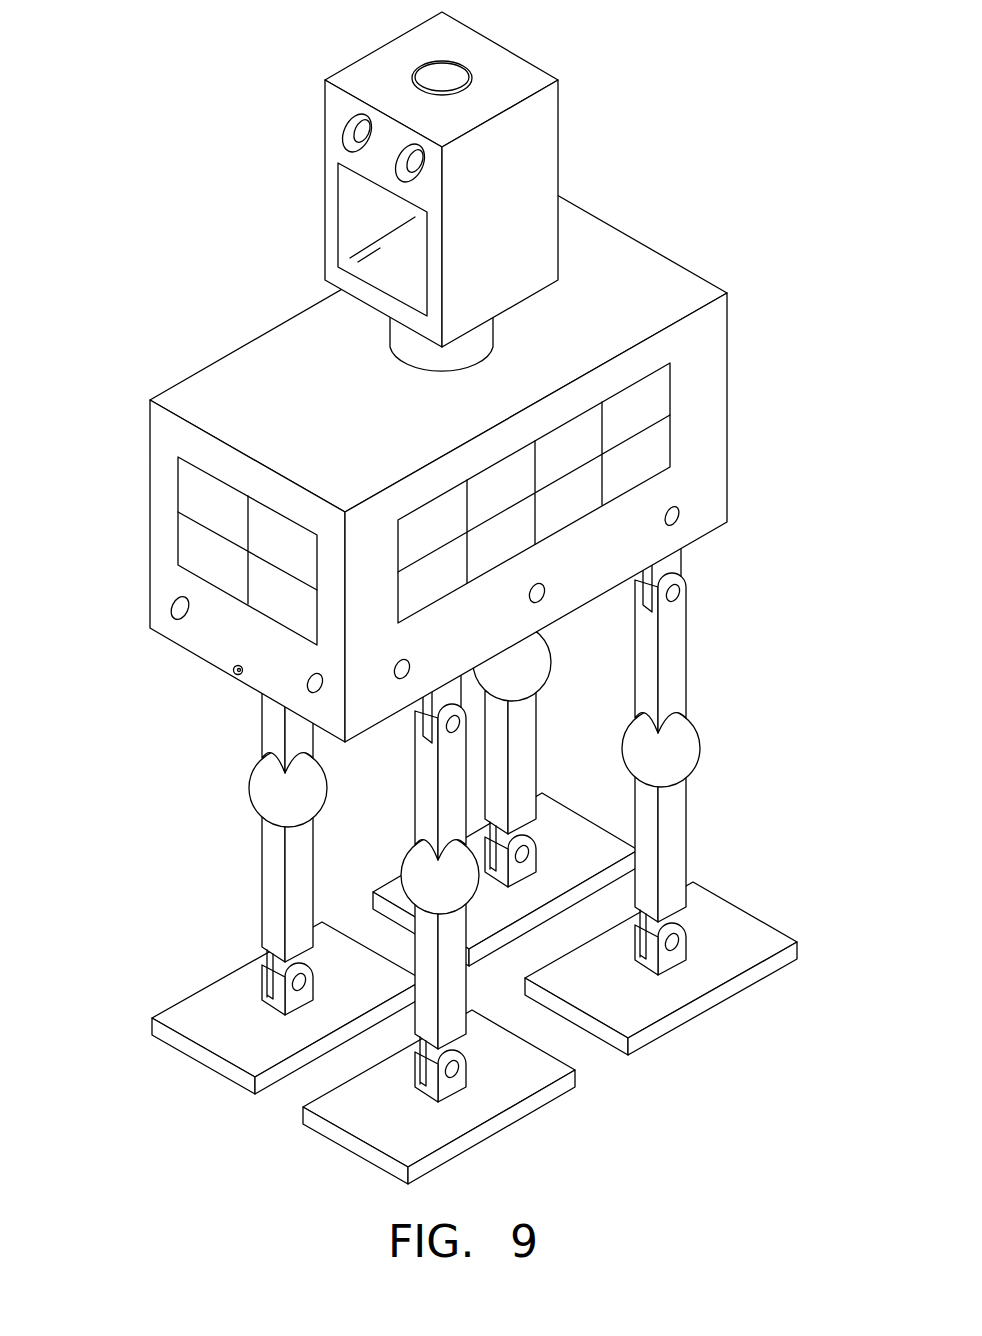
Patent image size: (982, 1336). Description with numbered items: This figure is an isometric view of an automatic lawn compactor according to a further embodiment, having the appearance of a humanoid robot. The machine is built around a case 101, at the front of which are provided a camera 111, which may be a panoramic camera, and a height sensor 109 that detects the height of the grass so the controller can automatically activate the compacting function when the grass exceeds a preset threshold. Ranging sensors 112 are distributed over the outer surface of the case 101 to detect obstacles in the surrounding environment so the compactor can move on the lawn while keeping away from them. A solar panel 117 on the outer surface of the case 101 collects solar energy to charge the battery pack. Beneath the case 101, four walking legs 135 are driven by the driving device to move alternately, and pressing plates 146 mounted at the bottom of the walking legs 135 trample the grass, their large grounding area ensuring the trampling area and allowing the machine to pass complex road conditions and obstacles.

The case 101 is at (708, 323).
The height sensor 109 is at (238, 667).
The camera 111 is at (362, 129).
The ranging sensor 112 is at (677, 510).
The solar panel 117 is at (657, 408).
The walking leg 135 is at (675, 655).
The pressing plate 146 is at (752, 940).